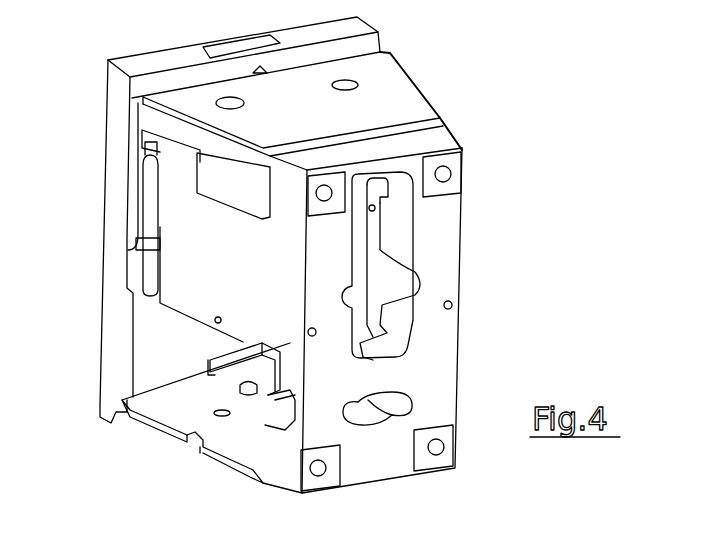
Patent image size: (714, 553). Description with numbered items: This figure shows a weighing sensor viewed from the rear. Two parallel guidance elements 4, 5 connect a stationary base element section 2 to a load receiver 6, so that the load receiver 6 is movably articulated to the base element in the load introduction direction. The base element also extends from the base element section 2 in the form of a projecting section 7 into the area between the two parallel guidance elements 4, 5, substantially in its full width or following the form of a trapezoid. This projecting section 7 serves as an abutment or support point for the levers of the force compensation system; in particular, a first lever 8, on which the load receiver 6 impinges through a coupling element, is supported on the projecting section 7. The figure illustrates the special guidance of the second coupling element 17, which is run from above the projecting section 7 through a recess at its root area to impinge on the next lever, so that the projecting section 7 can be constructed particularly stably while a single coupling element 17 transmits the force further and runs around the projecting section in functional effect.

The base element section 2 is at (449, 238).
The parallel guidance element 4 is at (403, 97).
The parallel guidance element 5 is at (168, 425).
The load receiver 6 is at (117, 260).
The projecting section 7 is at (207, 264).
The first lever 8 is at (200, 188).
The second coupling element 17 is at (357, 293).